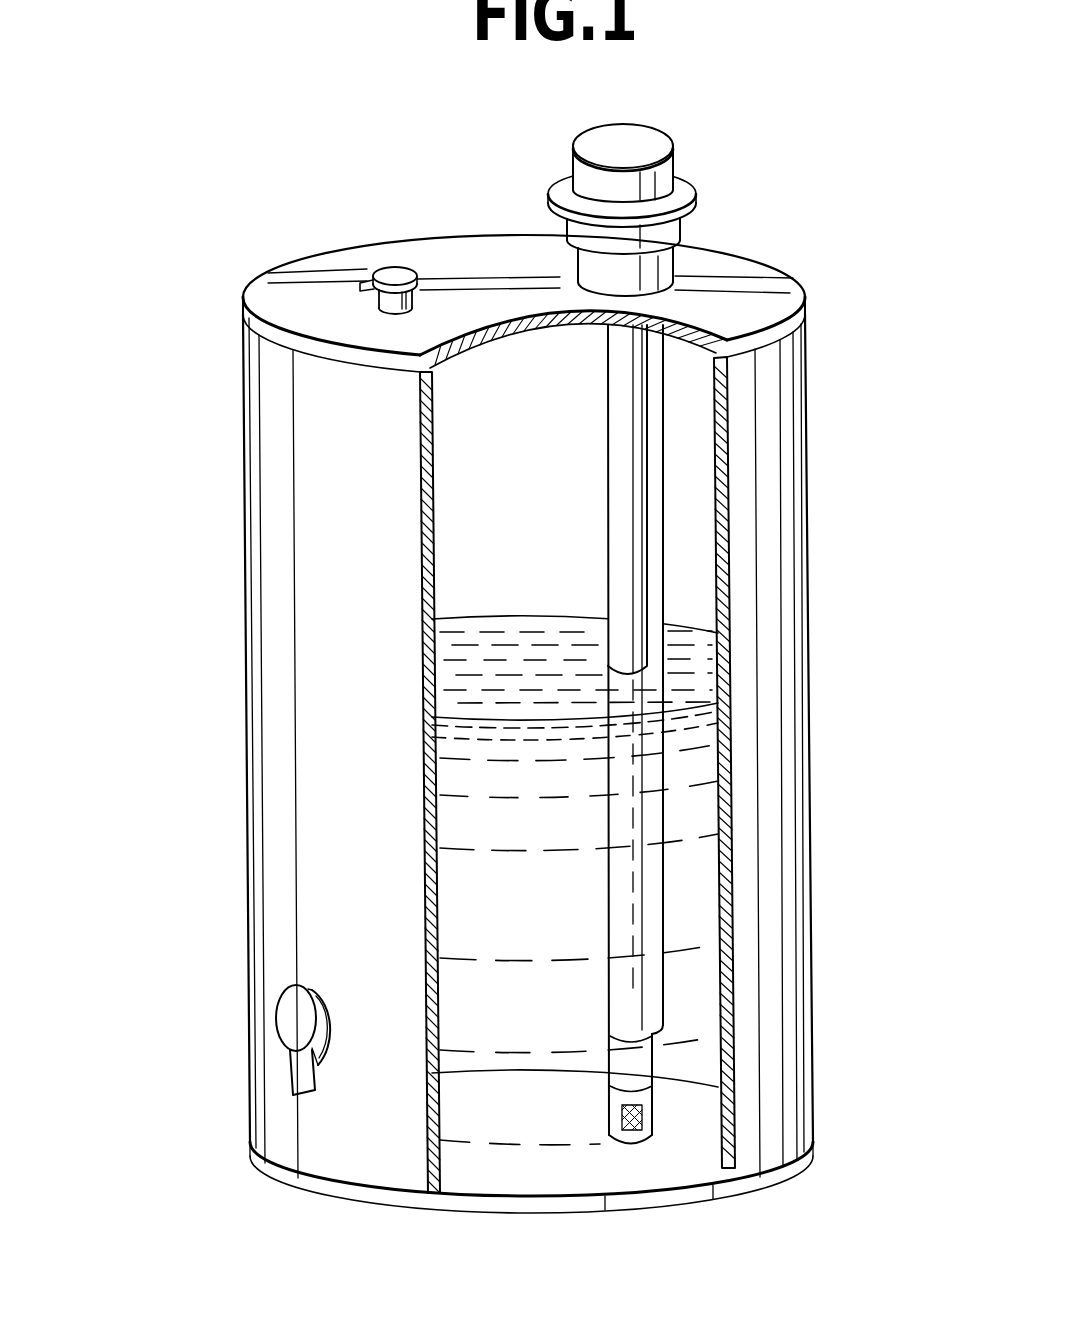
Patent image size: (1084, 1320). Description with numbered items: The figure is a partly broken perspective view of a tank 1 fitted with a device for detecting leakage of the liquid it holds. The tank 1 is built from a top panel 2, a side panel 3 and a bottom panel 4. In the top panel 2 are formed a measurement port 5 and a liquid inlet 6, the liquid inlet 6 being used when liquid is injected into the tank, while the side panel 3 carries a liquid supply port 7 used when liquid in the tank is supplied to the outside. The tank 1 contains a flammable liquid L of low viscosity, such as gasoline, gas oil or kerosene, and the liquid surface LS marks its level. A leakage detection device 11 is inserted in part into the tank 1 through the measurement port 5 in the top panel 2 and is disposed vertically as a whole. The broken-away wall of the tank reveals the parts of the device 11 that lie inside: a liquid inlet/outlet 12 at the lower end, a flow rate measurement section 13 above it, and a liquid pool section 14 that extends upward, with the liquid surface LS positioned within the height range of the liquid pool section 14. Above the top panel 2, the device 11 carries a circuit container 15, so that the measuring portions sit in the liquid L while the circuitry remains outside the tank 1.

The tank 1 is at (317, 238).
The top panel 2 is at (260, 290).
The side panel 3 is at (275, 658).
The bottom panel 4 is at (490, 1208).
The measurement port 5 is at (577, 272).
The liquid inlet 6 is at (395, 270).
The liquid supply port 7 is at (288, 1032).
The leakage detection device 11 is at (586, 459).
The liquid inlet/outlet 12 is at (668, 1093).
The flow rate measurement section 13 is at (668, 1038).
The liquid pool section 14 is at (666, 667).
The circuit container 15 is at (634, 142).
The liquid surface LS is at (545, 618).
The liquid L is at (546, 836).